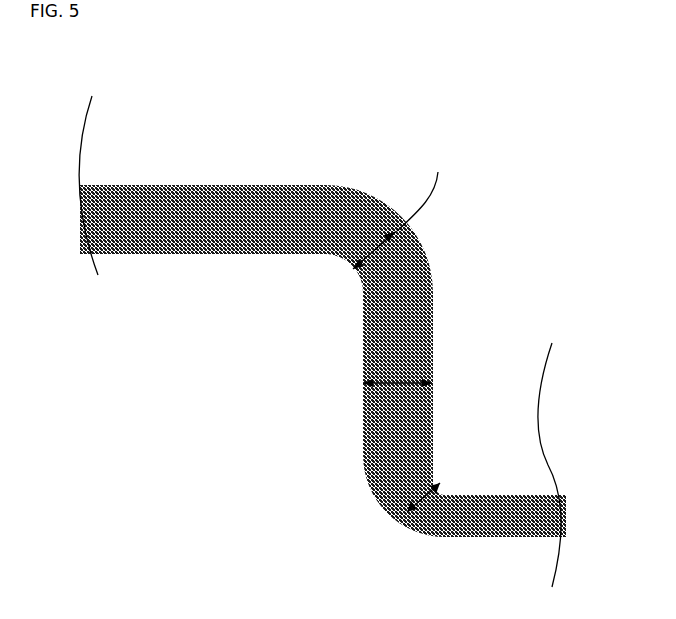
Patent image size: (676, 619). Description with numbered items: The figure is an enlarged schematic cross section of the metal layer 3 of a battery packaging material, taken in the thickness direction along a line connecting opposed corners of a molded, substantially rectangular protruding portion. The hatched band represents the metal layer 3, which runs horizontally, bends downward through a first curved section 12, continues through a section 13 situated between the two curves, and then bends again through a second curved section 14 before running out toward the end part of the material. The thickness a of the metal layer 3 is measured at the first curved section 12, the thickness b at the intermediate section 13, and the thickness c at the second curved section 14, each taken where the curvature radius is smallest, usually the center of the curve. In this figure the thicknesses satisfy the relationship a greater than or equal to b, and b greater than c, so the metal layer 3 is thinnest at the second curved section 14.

The metal layer 3 is at (240, 160).
The first curved section 12 is at (397, 231).
The section situated between the first curved section and the second curved section 13 is at (432, 383).
The second curved section 14 is at (407, 512).